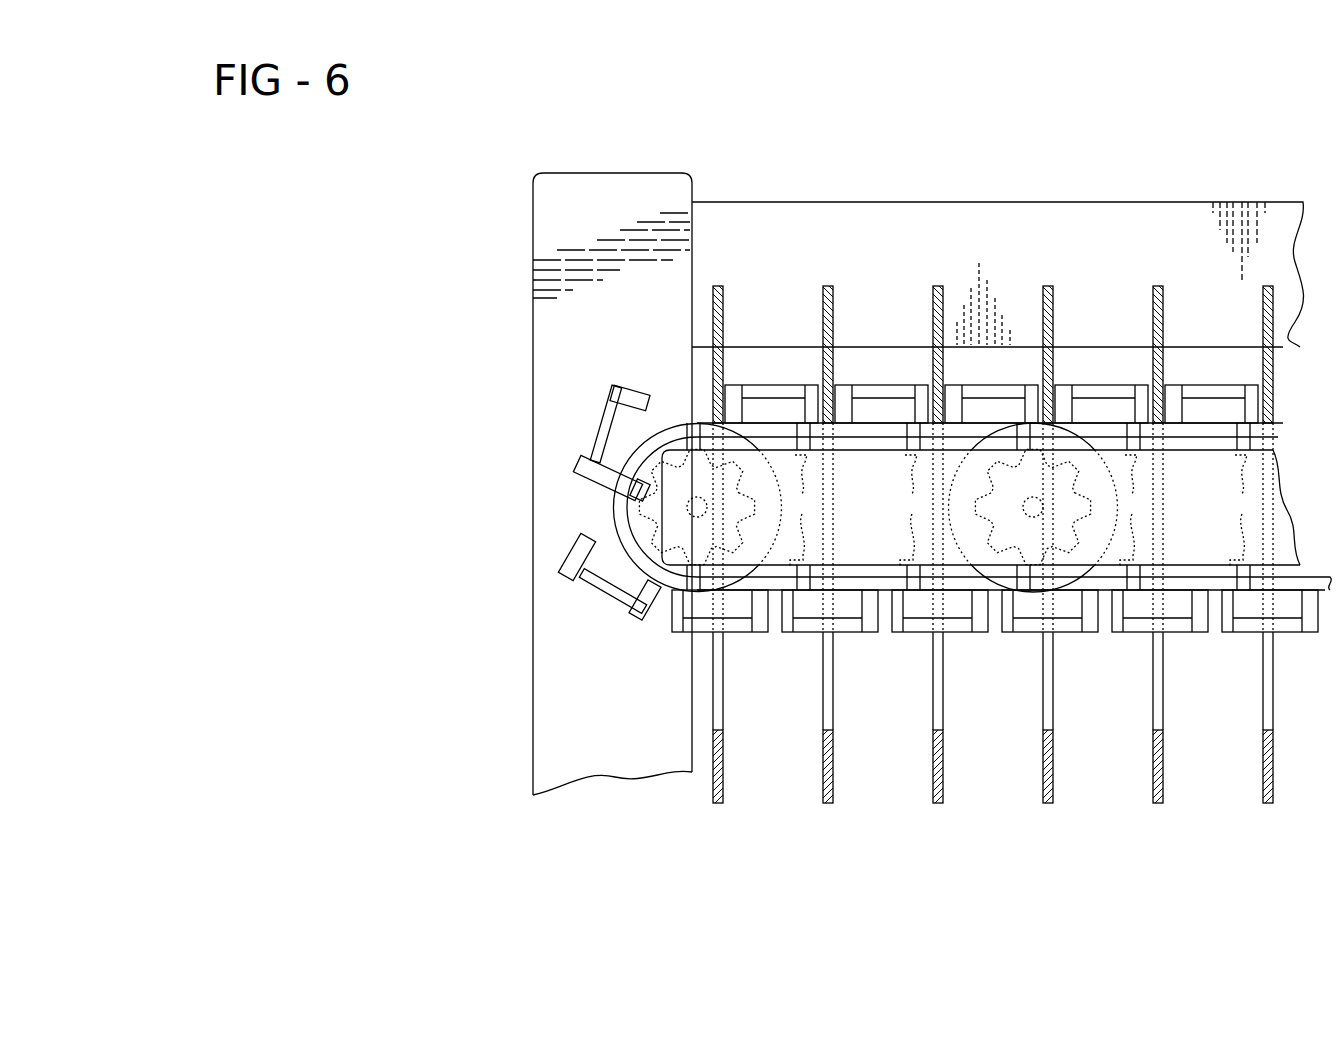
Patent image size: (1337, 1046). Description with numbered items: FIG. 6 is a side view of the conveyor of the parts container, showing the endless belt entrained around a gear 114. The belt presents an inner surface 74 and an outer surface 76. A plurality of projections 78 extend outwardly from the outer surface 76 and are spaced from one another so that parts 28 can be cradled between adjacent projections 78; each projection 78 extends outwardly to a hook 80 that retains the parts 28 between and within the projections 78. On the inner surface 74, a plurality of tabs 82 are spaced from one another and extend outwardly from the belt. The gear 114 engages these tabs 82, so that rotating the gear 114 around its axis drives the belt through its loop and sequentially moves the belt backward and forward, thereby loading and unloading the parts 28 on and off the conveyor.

The parts 28 is at (1153, 710).
The inner surface 74 is at (878, 568).
The outer surface 76 is at (611, 525).
The projections 78 is at (733, 385).
The hook 80 is at (626, 388).
The tabs 82 is at (637, 485).
The gear 114 is at (675, 532).